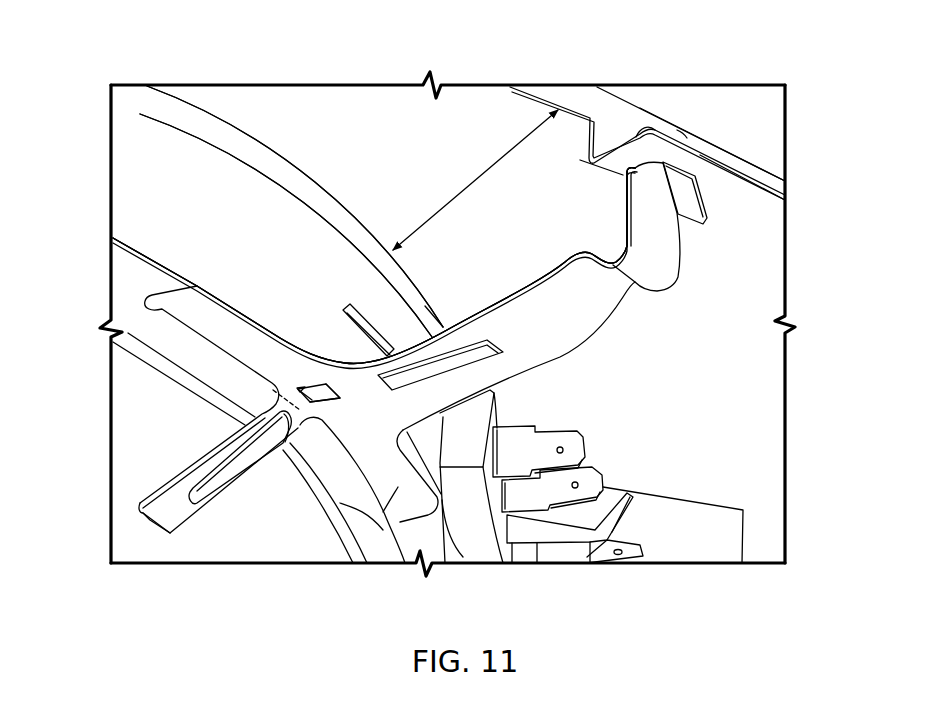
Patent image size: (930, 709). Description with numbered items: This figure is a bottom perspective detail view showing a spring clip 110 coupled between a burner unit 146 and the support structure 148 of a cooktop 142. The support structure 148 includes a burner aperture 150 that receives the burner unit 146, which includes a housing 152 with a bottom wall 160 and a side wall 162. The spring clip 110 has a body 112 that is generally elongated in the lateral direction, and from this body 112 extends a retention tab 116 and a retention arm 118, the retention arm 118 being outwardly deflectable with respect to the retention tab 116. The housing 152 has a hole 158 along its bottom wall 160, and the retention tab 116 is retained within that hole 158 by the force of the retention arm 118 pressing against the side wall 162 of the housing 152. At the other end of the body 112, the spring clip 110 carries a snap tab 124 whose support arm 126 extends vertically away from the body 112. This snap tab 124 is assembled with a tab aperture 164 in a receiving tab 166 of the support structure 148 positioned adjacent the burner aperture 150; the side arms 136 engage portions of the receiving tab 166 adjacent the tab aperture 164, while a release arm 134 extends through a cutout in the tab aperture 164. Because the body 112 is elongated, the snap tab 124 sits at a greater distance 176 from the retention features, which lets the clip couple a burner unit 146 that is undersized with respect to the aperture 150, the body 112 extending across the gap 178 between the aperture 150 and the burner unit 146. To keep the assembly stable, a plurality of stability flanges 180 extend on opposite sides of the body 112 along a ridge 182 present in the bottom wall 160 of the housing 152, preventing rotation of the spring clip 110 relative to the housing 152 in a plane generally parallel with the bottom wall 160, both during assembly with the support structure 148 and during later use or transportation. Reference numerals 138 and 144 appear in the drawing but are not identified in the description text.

The spring clip 110 is at (512, 276).
The body 112 is at (560, 350).
The retention tab 116 is at (320, 382).
The retention arm 118 is at (373, 333).
The snap tab 124 is at (684, 111).
The support arm 126 is at (638, 228).
The release arm 134 is at (694, 207).
The side arms 136 is at (690, 125).
The slotted tongue 138 is at (183, 517).
The cooktop 142 is at (746, 410).
The band end 144 is at (464, 127).
The burner unit 146 is at (294, 232).
The support structure 148 is at (619, 116).
The burner aperture 150 is at (522, 114).
The housing 152 is at (206, 196).
The hole 158 is at (330, 393).
The bottom wall 160 is at (418, 527).
The side wall 162 is at (251, 212).
The tab aperture 164 is at (637, 172).
The receiving tab 166 is at (743, 192).
The distance 176 is at (483, 176).
The gap 178 is at (399, 118).
The stability flanges 180 is at (147, 304).
The ridge 182 is at (131, 283).